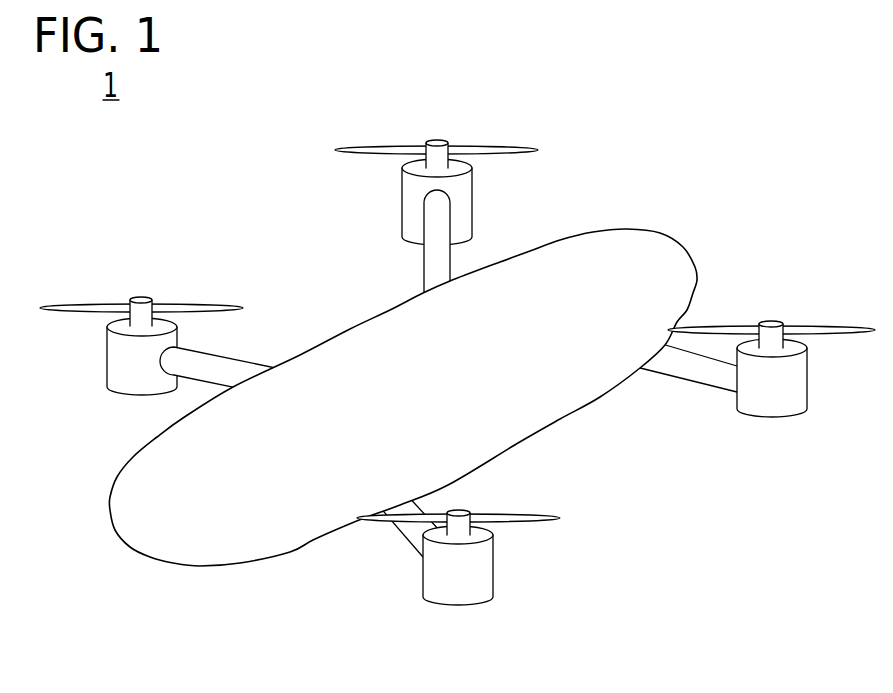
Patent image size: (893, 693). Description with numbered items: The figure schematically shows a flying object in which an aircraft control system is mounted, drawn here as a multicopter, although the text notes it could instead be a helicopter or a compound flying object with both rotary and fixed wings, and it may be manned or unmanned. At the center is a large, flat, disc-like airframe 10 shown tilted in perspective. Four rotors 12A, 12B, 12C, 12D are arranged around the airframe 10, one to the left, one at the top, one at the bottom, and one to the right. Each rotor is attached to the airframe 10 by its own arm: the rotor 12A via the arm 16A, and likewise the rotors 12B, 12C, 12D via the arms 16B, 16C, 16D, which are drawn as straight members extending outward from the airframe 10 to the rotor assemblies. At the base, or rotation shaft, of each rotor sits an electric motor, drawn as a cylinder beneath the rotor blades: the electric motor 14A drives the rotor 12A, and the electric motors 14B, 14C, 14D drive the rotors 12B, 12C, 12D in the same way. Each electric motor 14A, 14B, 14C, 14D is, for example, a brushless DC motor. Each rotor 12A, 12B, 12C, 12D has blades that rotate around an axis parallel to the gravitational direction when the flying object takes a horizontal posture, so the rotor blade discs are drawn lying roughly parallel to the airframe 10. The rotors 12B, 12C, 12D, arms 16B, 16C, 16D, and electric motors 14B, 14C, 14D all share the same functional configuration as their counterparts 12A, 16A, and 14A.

The airframe 10 is at (152, 557).
The rotor 12A is at (197, 303).
The rotor 12B is at (490, 143).
The rotor 12C is at (523, 525).
The rotor 12D is at (840, 337).
The electric motor 14A is at (107, 355).
The electric motor 14B is at (402, 195).
The electric motor 14C is at (457, 608).
The electric motor 14D is at (770, 420).
The arm 16A is at (249, 363).
The arm 16B is at (424, 257).
The arm 16C is at (404, 535).
The arm 16D is at (690, 380).